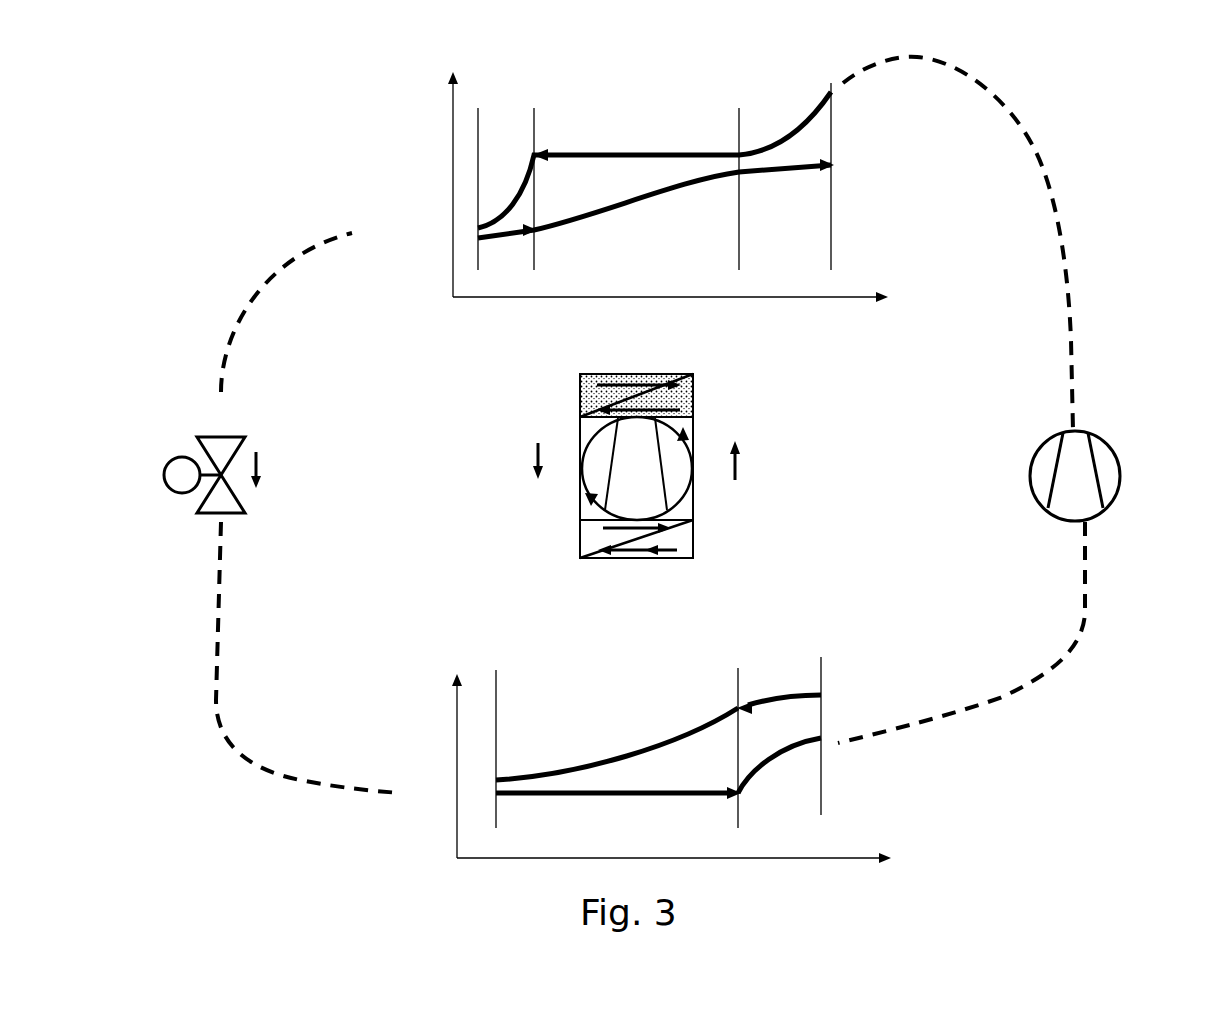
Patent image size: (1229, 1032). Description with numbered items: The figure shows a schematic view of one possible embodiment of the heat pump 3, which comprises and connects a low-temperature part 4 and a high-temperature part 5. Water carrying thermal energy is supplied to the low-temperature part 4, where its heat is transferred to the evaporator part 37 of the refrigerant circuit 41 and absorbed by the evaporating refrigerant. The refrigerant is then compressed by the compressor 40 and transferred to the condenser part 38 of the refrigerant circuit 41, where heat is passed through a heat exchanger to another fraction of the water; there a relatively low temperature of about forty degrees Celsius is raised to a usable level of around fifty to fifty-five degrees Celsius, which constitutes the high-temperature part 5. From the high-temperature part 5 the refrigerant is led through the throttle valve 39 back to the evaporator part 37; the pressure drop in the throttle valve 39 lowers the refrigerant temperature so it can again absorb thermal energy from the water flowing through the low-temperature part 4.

The heat pump 3 is at (670, 465).
The low-temperature part 4 is at (636, 570).
The high-temperature part 5 is at (662, 364).
The evaporator part 37 is at (690, 697).
The condenser part 38 is at (716, 96).
The throttle valve 39 is at (270, 518).
The compressor 40 is at (1118, 459).
The refrigerant circuit 41 is at (232, 324).